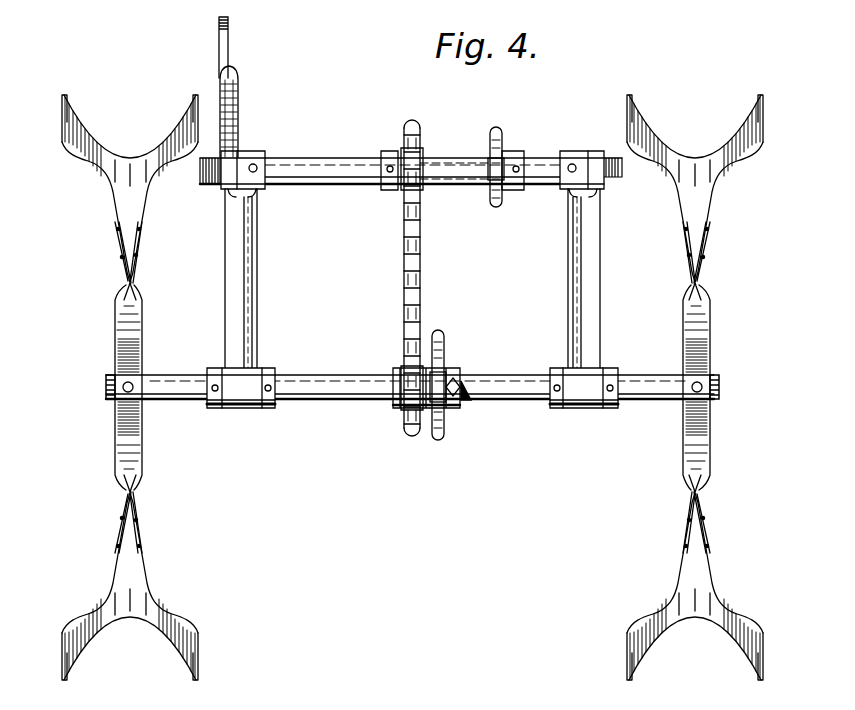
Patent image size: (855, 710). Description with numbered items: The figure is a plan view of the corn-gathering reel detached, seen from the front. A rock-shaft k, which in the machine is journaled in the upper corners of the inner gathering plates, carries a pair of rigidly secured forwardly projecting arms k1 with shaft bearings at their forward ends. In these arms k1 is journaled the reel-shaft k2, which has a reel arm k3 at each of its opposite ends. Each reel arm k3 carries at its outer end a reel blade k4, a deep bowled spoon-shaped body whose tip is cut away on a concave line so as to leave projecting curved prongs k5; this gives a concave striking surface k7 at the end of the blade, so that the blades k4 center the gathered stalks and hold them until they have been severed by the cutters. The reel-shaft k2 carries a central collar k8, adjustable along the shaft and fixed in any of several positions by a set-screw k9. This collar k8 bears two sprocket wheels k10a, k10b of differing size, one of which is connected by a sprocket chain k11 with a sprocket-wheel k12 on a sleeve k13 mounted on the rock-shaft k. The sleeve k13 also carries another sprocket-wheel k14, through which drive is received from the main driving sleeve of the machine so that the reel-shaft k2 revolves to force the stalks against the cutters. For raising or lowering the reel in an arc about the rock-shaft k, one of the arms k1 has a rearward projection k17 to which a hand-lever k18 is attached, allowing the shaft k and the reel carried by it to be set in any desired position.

The rock-shaft k is at (312, 163).
The forwardly projecting arms k1 is at (258, 310).
The reel-shaft k2 is at (324, 377).
The reel arms k3 is at (720, 329).
The reel blades k4 is at (130, 226).
The curved prongs k5 is at (73, 131).
The concave striking surface k7 is at (128, 157).
The central collar k8 is at (458, 368).
The set-screw k9 is at (463, 384).
The sprocket wheel k10a is at (412, 430).
The sprocket wheel k10b is at (442, 332).
The sprocket chain k11 is at (421, 254).
The sprocket-wheel k12 is at (418, 131).
The sleeve k13 is at (458, 157).
The sprocket-wheel k14 is at (501, 137).
The rearward projection k17 is at (238, 101).
The hand-lever k18 is at (229, 45).